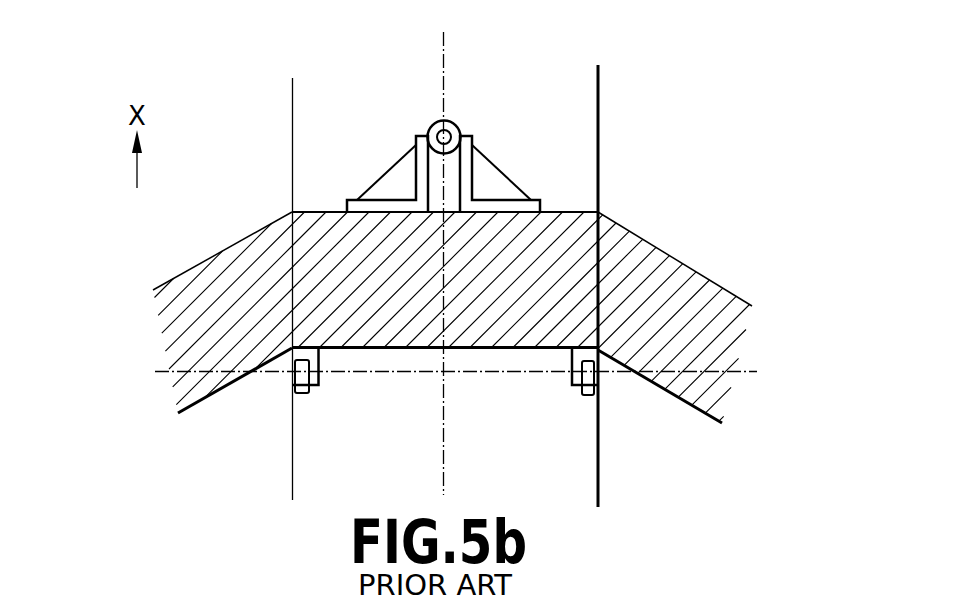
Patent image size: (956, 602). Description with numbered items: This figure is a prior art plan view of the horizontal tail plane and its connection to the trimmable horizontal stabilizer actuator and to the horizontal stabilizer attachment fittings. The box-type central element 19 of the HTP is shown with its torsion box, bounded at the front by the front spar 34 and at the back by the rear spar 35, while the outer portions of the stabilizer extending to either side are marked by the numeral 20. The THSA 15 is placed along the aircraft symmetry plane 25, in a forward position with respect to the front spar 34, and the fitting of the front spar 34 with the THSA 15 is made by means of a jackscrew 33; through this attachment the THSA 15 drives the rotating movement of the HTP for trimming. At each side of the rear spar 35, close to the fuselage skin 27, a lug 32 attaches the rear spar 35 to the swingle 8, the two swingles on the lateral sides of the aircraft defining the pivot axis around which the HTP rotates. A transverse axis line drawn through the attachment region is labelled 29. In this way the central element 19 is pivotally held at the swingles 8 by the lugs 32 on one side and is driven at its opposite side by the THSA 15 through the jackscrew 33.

The swingle 8 is at (585, 396).
The trimmable horizontal stabilizer actuator 15 is at (454, 130).
The box-type central element 19 is at (445, 279).
The inclined side wing 20 is at (452, 317).
The aircraft symmetry plane 25 is at (442, 52).
The fuselage skin 27 is at (291, 102).
The horizontal axis 29 is at (746, 375).
The lug 32 is at (571, 358).
The jackscrew 33 is at (471, 165).
The front spar 34 is at (325, 211).
The rear spar 35 is at (356, 349).